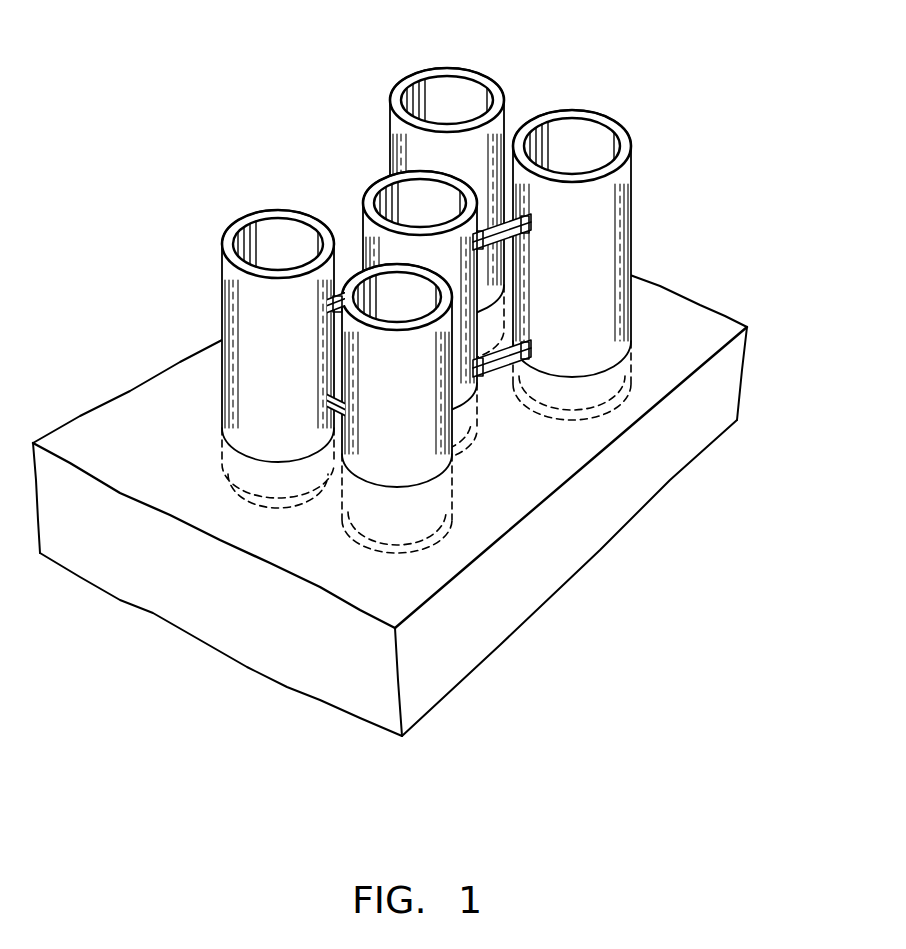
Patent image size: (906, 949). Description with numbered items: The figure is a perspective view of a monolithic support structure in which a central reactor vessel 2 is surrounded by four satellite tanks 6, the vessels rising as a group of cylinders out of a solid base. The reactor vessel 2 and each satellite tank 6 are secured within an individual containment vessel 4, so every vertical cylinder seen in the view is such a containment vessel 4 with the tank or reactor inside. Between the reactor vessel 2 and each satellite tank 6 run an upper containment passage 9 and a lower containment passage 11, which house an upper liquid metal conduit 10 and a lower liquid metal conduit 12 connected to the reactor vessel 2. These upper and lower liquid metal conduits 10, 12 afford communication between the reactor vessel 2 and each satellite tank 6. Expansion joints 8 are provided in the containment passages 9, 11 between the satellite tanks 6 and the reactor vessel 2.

The reactor vessel 2 is at (366, 192).
The containment vessel 4 is at (506, 110).
The satellite tank 6 is at (430, 90).
The expansion joint 8 is at (220, 338).
The upper containment passage 9 is at (528, 232).
The upper liquid metal conduit 10 is at (338, 262).
The lower containment passage 11 is at (522, 378).
The lower liquid metal conduit 12 is at (521, 335).